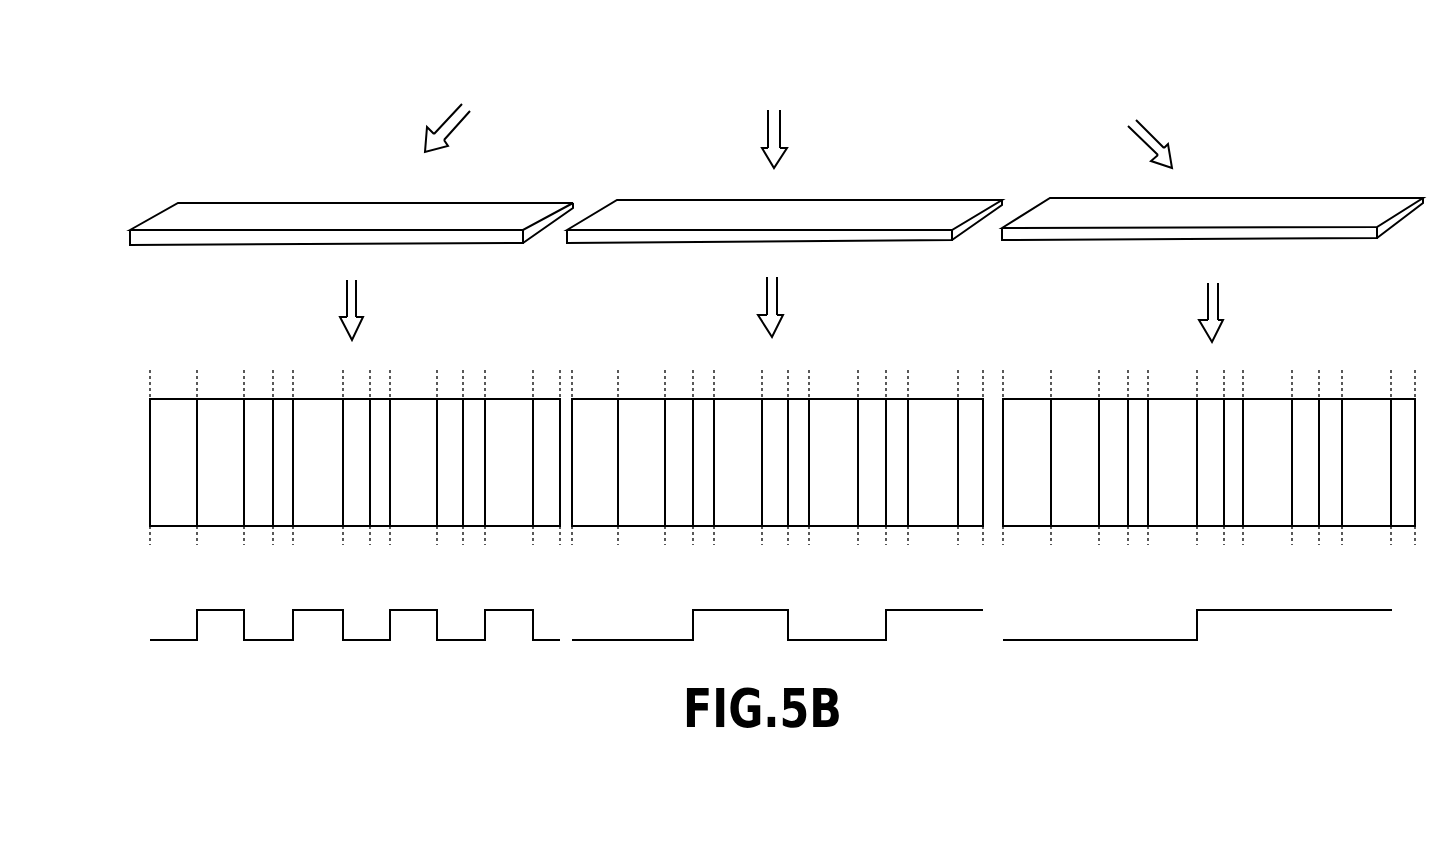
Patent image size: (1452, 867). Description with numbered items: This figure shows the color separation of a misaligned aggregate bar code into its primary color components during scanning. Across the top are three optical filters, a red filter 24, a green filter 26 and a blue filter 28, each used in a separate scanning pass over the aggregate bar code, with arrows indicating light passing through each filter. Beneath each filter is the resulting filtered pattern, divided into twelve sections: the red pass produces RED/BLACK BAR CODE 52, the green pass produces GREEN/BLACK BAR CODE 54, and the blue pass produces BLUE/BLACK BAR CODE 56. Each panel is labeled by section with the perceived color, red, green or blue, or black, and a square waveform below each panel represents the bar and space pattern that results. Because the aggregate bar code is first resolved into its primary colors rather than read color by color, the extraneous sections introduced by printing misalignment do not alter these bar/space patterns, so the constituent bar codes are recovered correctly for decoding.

The red filter 24 is at (508, 207).
The green filter 26 is at (937, 208).
The blue filter 28 is at (1348, 208).
The RED/BLACK BAR CODE 52 is at (147, 422).
The GREEN/BLACK BAR CODE 54 is at (572, 410).
The BLUE/BLACK BAR CODE 56 is at (1003, 417).